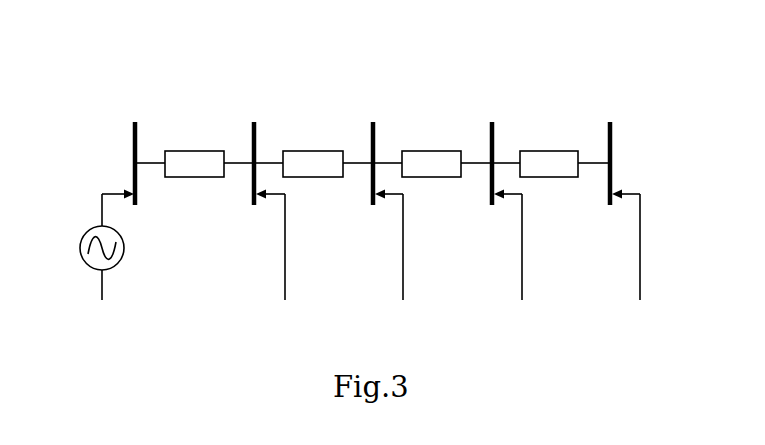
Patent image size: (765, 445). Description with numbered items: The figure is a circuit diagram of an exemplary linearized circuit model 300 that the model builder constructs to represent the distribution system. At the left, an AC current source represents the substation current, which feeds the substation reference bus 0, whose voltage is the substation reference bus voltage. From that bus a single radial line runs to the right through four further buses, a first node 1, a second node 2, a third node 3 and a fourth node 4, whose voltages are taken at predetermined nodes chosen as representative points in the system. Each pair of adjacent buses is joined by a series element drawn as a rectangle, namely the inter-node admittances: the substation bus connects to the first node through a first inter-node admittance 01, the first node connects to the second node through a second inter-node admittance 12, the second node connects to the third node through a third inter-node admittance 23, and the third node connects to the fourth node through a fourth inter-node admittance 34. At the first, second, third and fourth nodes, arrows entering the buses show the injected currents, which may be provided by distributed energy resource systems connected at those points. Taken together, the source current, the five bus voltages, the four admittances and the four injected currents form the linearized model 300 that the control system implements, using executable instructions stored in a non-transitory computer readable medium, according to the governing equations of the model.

The linearized circuit model 300 is at (346, 222).
The substation reference bus voltage 0 is at (135, 149).
The first node voltage 1 is at (254, 149).
The second node voltage 2 is at (373, 149).
The third node voltage 3 is at (492, 149).
The fourth node voltage 4 is at (610, 149).
The inter-node admittance y01 01 is at (194, 148).
The inter-node admittance y12 12 is at (313, 148).
The inter-node admittance y23 23 is at (432, 148).
The inter-node admittance y34 34 is at (551, 148).